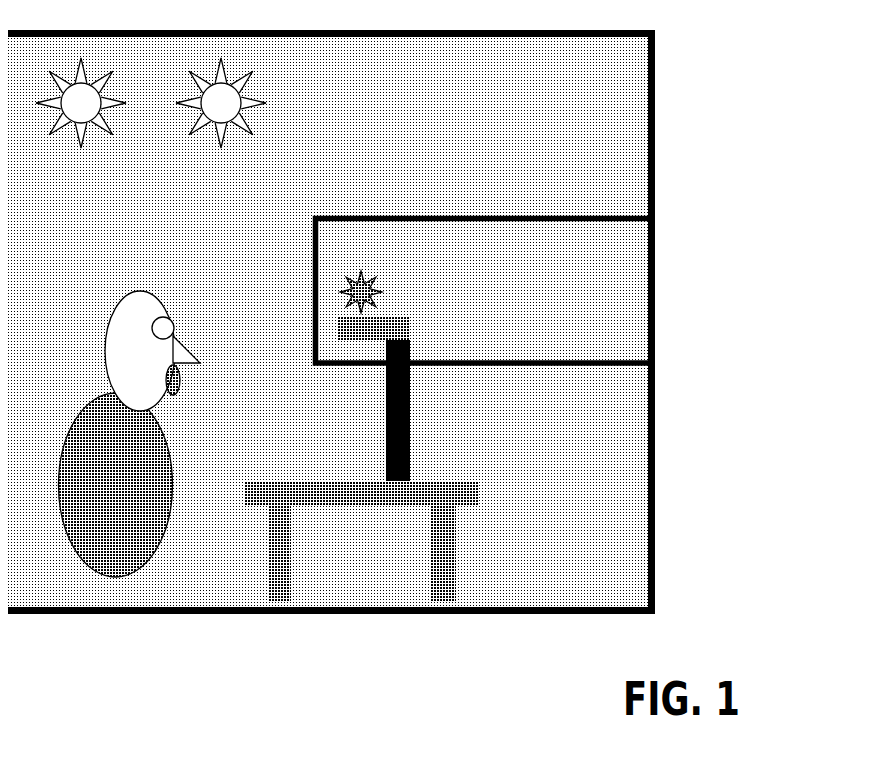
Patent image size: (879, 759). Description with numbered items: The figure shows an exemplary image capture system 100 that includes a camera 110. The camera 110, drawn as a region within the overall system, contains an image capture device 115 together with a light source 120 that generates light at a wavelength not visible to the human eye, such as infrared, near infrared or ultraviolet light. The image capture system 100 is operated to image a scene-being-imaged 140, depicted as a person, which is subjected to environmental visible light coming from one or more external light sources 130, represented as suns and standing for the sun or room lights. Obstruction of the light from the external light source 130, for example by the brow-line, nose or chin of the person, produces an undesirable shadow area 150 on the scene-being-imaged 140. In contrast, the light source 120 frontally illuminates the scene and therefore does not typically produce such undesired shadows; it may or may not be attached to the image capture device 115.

The image capture system 100 is at (643, 423).
The camera 110 is at (643, 236).
The image capture device 115 is at (405, 322).
The light source 120 is at (363, 257).
The external light source 130 is at (78, 143).
The scene-being-imaged 140 is at (100, 305).
The shadow area 150 is at (172, 373).